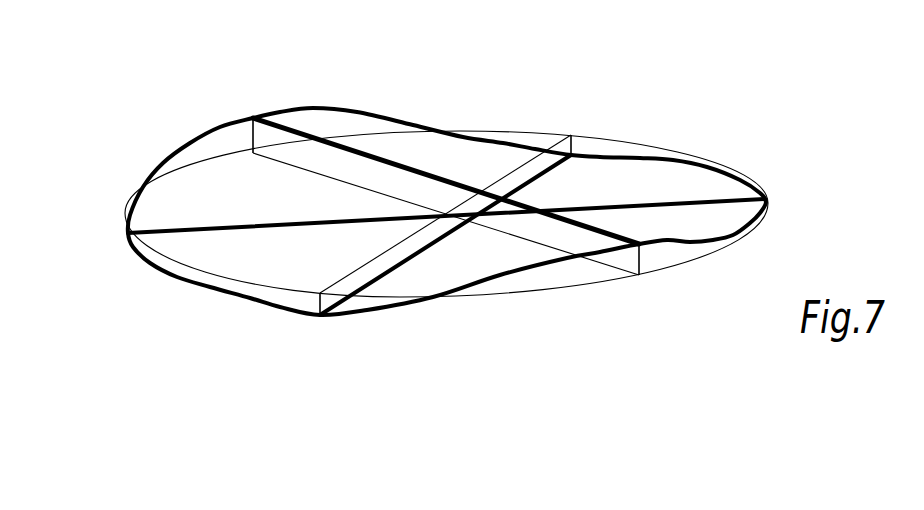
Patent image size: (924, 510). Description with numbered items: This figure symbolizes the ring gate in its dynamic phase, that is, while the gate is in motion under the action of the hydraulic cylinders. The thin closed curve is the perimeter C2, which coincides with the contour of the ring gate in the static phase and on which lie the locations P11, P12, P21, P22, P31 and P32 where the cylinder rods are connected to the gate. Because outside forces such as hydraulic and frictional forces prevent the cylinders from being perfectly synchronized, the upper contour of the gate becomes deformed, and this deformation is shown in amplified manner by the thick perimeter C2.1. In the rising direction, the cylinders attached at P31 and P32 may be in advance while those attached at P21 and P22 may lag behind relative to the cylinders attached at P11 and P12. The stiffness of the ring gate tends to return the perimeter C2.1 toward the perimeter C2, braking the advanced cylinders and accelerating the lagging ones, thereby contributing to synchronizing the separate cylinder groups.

The perimeter C2 is at (493, 132).
The perimeter C2.1 is at (357, 112).
The location P11 is at (111, 234).
The location P12 is at (786, 189).
The location P21 is at (312, 321).
The location P22 is at (585, 129).
The location P31 is at (649, 277).
The location P32 is at (241, 122).